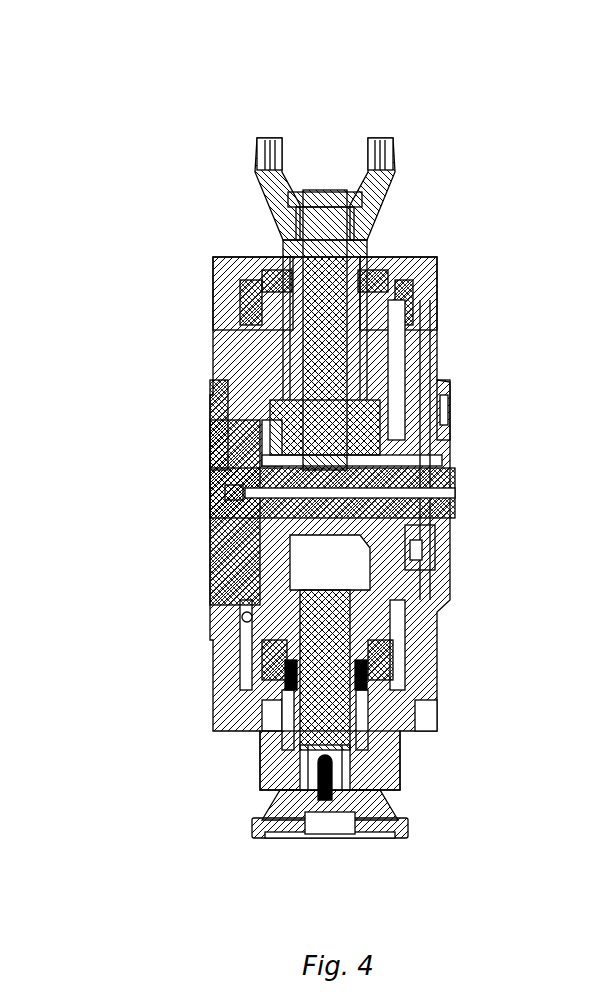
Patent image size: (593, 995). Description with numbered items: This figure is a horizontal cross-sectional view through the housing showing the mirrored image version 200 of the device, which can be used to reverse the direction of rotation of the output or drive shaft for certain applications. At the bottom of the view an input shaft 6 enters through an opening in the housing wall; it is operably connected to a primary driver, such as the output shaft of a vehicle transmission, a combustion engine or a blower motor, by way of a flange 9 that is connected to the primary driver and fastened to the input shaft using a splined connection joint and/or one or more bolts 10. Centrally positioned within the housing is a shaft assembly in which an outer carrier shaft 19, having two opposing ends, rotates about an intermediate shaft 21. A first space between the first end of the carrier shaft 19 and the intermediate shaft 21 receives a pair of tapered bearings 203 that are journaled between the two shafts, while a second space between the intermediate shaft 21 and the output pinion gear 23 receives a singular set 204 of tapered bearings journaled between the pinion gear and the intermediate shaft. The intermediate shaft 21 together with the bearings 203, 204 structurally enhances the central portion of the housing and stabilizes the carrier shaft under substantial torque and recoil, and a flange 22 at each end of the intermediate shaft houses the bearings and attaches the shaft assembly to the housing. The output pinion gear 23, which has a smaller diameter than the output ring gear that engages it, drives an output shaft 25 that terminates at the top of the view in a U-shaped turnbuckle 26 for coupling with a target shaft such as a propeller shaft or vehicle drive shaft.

The mirrored image version 200 is at (386, 84).
The U-shaped turnbuckle 26 is at (385, 192).
The output shaft 25 is at (240, 302).
The output pinion gear 23 is at (218, 392).
The flange 22 is at (195, 452).
The tapered bearings 203 is at (447, 437).
The intermediate shaft 21 is at (592, 492).
The carrier shaft 19 is at (420, 548).
The singular set of tapered bearings 204 is at (212, 455).
The flange 9 is at (255, 828).
The input shaft 6 is at (398, 782).
The bolts 10 is at (333, 828).